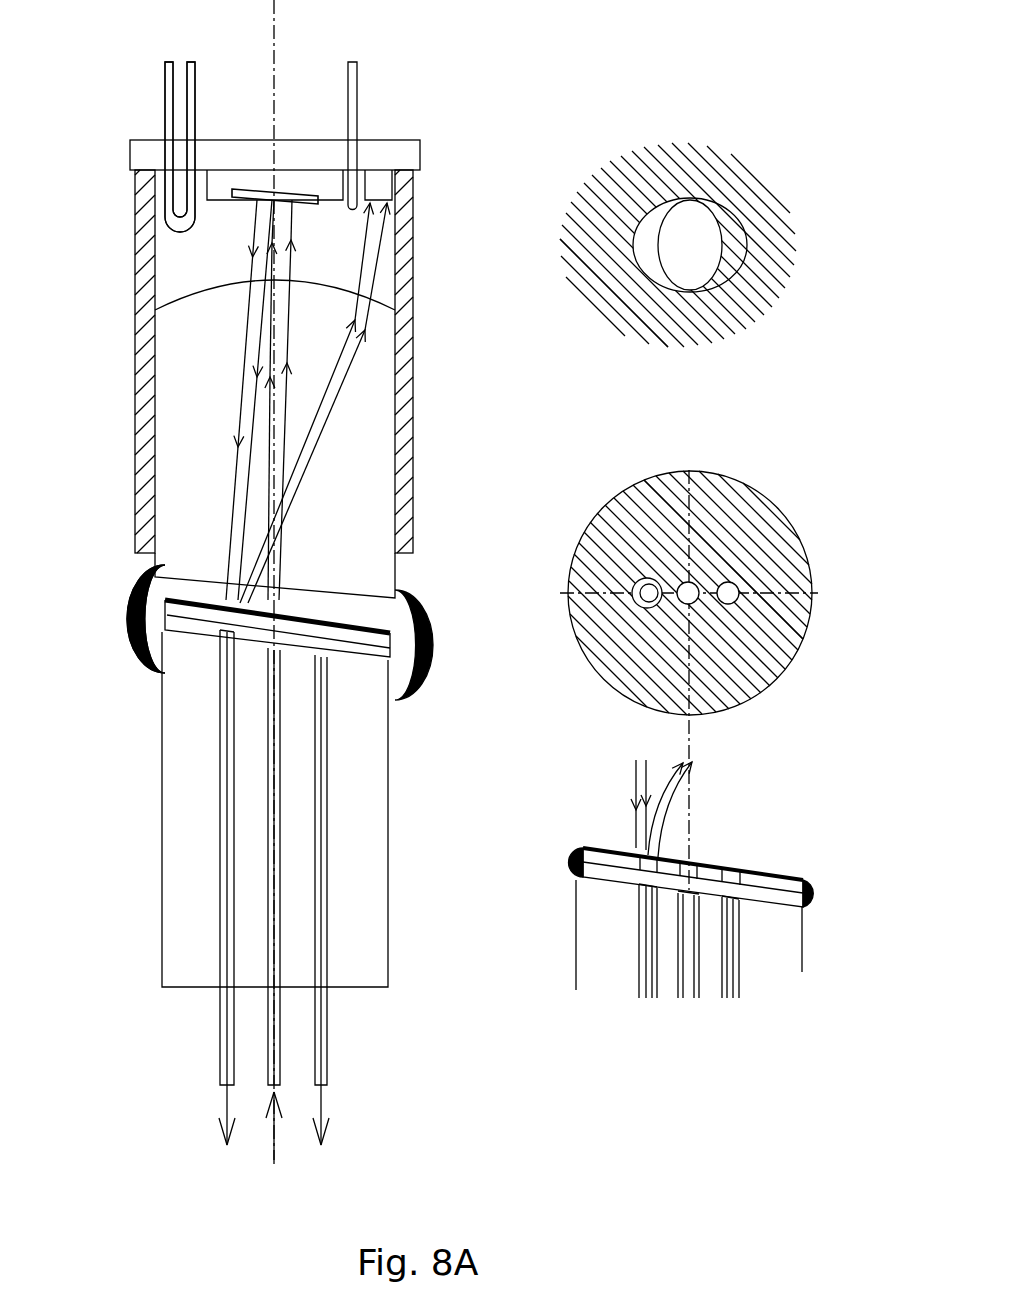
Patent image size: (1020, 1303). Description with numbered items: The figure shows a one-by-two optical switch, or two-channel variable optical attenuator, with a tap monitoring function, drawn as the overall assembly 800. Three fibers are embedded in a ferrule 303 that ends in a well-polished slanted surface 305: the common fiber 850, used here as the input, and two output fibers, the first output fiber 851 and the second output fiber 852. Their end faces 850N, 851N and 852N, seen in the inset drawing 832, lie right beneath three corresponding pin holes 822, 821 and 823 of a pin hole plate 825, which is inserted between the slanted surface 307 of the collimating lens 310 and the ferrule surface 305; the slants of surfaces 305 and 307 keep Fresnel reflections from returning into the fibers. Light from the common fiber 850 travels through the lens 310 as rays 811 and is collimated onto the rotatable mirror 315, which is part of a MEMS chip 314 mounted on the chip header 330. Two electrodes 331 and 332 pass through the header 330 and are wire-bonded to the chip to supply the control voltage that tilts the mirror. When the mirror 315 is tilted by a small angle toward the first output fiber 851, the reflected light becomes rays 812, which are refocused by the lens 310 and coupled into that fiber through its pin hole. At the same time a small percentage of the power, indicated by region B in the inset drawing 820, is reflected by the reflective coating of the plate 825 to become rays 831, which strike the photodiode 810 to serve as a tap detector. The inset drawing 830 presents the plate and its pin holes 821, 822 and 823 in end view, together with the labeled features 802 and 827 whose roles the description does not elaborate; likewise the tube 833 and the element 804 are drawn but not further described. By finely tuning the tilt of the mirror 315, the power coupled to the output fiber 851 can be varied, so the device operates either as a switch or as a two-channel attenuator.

The optical probe assembly 800 is at (301, 582).
The ferrule 303 is at (160, 800).
The slanted surface 305 is at (210, 617).
The slanted surface of the collimating lens 307 is at (128, 597).
The collimating lens 310 is at (366, 452).
The MEMS chip 314 is at (224, 187).
The rotatable mirror 315 is at (284, 192).
The chip header 330 is at (388, 153).
The electrode 331 is at (163, 97).
The electrode 332 is at (198, 97).
The ferrule end face 802 is at (806, 536).
The seal 804 is at (128, 643).
The photodiode 810 is at (378, 187).
The rays 811 is at (297, 243).
The rays 812 is at (252, 250).
The inset drawing 820 is at (718, 73).
The pin hole 821 is at (732, 226).
The pin hole 822 is at (690, 581).
The pin hole 823 is at (729, 581).
The pin hole plate 825 is at (196, 597).
The fiber cladding 827 is at (646, 212).
The end view detail 830 is at (800, 447).
The rays 831 is at (350, 343).
The inset drawing 832 is at (606, 774).
The tube 833 is at (360, 93).
The common fiber 850 is at (282, 762).
The fiber end face 850N is at (692, 893).
The output fiber 851 is at (220, 1042).
The fiber end face 851N is at (183, 631).
The output fiber 852 is at (330, 1057).
The fiber end face 852N is at (737, 898).